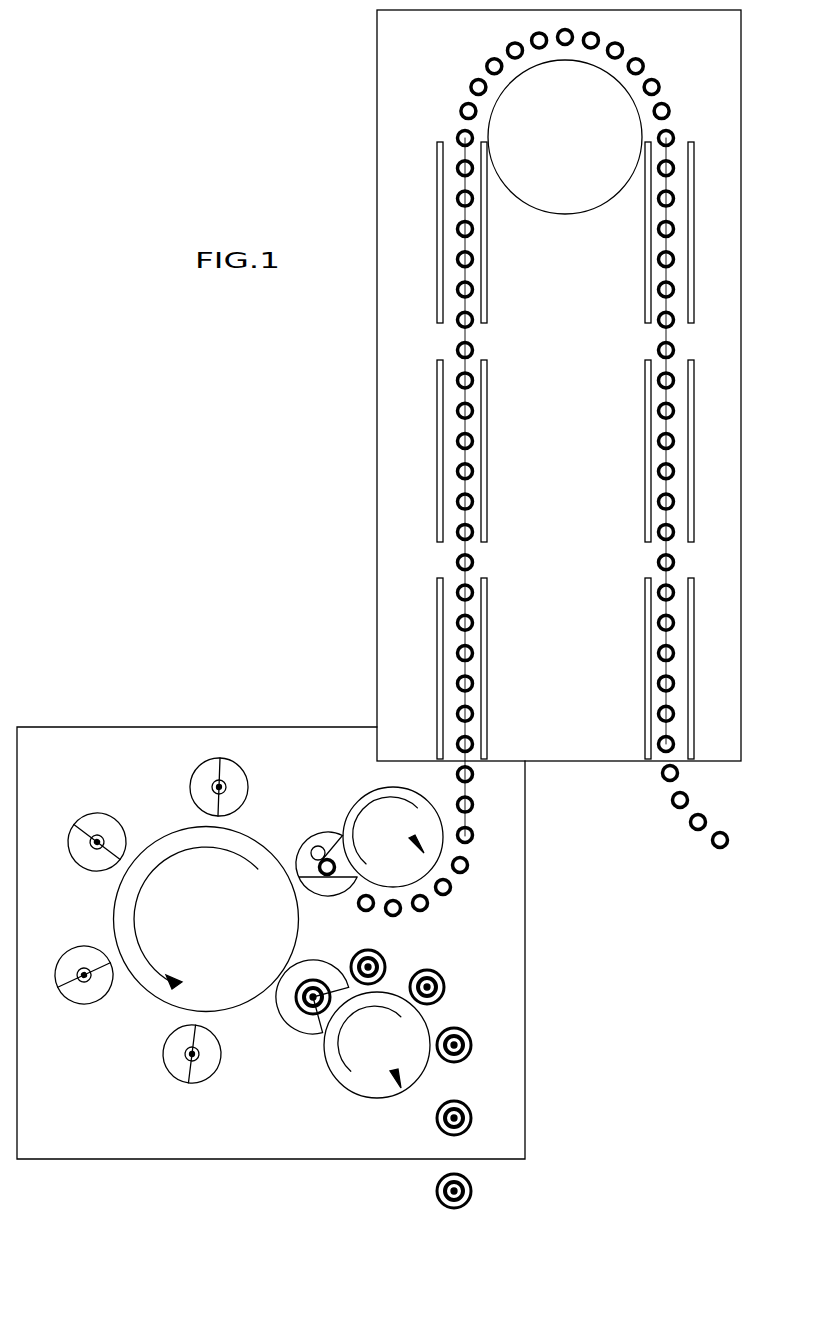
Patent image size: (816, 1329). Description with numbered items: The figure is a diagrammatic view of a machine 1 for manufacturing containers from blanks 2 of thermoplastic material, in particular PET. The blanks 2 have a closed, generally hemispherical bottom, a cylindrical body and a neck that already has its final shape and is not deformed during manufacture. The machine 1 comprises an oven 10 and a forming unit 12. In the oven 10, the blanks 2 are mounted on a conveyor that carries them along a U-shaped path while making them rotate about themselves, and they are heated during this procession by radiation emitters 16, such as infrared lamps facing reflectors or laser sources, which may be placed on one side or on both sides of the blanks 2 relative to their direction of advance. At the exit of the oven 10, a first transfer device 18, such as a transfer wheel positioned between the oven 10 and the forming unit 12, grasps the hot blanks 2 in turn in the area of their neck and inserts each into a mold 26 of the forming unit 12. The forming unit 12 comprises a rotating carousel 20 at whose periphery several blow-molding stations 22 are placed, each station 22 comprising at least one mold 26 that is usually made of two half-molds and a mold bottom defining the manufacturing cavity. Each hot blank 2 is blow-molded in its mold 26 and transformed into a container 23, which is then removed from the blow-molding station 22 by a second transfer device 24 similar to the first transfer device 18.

The machine for manufacturing containers 1 is at (138, 507).
The blanks 2 is at (472, 443).
The oven 10 is at (377, 422).
The forming unit 12 is at (203, 725).
The radiation emitters 16 is at (440, 293).
The first transfer device 18 is at (377, 787).
The rotating carousel 20 is at (113, 920).
The blow-molding stations 22 is at (177, 782).
The container 23 is at (381, 961).
The second transfer device 24 is at (372, 1098).
The mold 26 is at (80, 855).